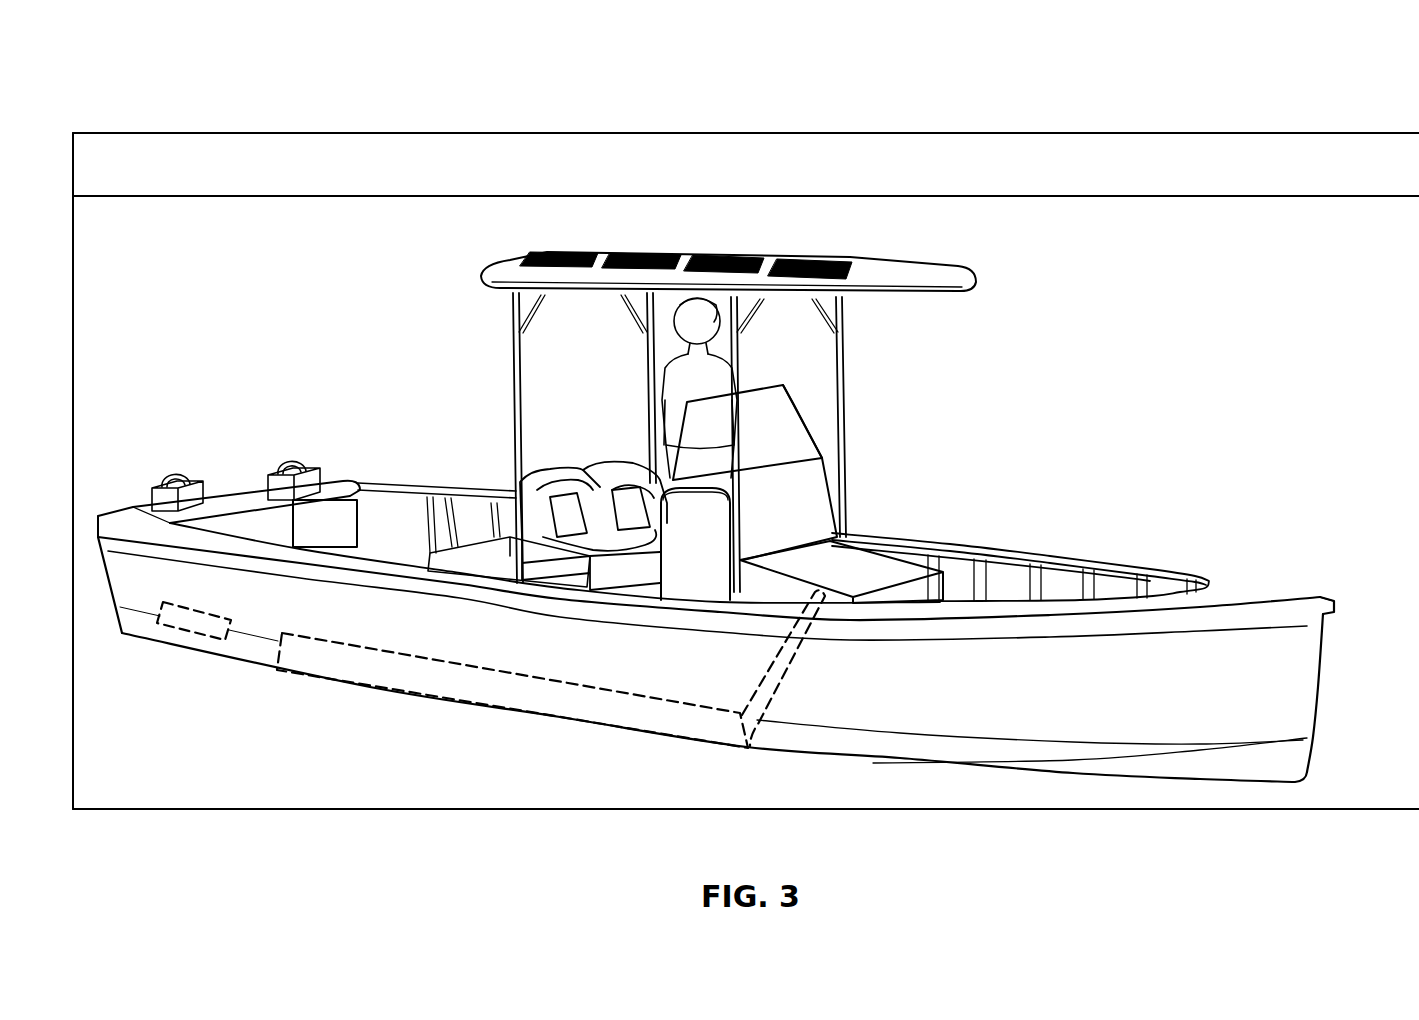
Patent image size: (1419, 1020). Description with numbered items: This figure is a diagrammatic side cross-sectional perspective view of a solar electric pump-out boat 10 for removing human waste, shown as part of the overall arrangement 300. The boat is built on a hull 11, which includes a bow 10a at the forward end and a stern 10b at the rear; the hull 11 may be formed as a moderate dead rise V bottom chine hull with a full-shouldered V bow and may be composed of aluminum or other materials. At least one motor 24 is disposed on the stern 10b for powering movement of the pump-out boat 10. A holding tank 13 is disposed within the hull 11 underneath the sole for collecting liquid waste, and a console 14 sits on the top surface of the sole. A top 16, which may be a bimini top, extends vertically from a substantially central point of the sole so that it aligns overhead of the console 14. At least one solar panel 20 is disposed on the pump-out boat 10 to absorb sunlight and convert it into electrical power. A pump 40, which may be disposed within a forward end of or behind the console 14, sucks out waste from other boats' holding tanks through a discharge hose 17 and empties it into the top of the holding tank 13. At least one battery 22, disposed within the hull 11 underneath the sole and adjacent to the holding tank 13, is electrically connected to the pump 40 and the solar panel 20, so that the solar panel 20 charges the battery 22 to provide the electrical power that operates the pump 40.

The marine vessel system 300 is at (262, 53).
The pump-out boat 10 is at (1143, 441).
The bow 10a is at (1309, 618).
The stern 10b is at (155, 583).
The hull 11 is at (1008, 703).
The holding tank 13 is at (565, 707).
The console 14 is at (795, 519).
The top 16 is at (495, 273).
The hose 17 is at (780, 667).
The solar panel 20 is at (747, 257).
The battery 22 is at (170, 622).
The motor 24 is at (278, 487).
The pump 40 is at (890, 577).